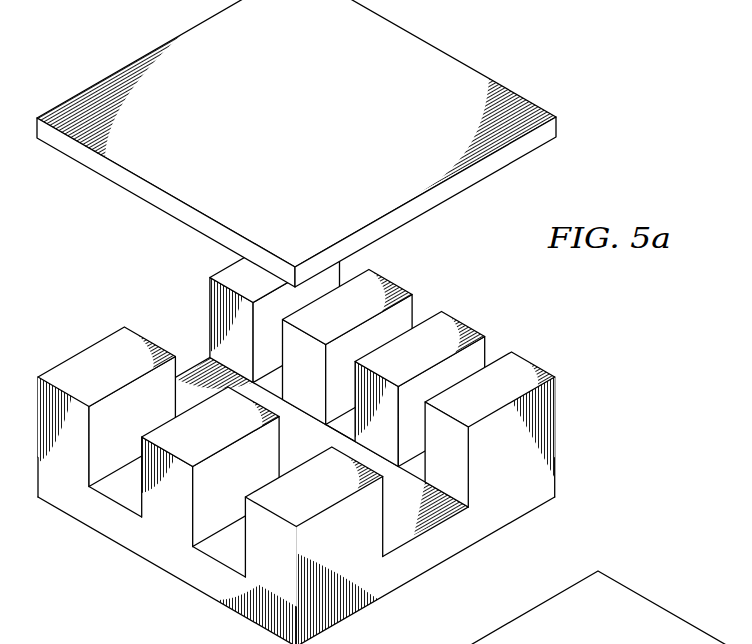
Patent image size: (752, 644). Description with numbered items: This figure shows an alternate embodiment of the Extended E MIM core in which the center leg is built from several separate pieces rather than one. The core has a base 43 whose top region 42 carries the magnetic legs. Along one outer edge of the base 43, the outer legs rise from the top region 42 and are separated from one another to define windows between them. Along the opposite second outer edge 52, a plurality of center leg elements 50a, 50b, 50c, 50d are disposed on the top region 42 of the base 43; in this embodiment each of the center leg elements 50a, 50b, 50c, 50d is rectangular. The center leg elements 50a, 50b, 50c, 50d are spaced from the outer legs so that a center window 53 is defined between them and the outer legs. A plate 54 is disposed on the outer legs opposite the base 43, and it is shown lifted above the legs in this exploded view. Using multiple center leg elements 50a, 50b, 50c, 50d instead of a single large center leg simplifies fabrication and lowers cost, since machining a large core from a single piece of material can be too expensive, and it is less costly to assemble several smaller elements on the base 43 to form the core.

The plate 54 is at (458, 67).
The center leg element 50a is at (231, 277).
The center leg element 50b is at (407, 312).
The center leg element 50c is at (453, 323).
The center leg element 50d is at (522, 364).
The top region 42 is at (292, 427).
The base 43 is at (147, 552).
The second outer edge 52 is at (518, 501).
The center window 53 is at (456, 467).